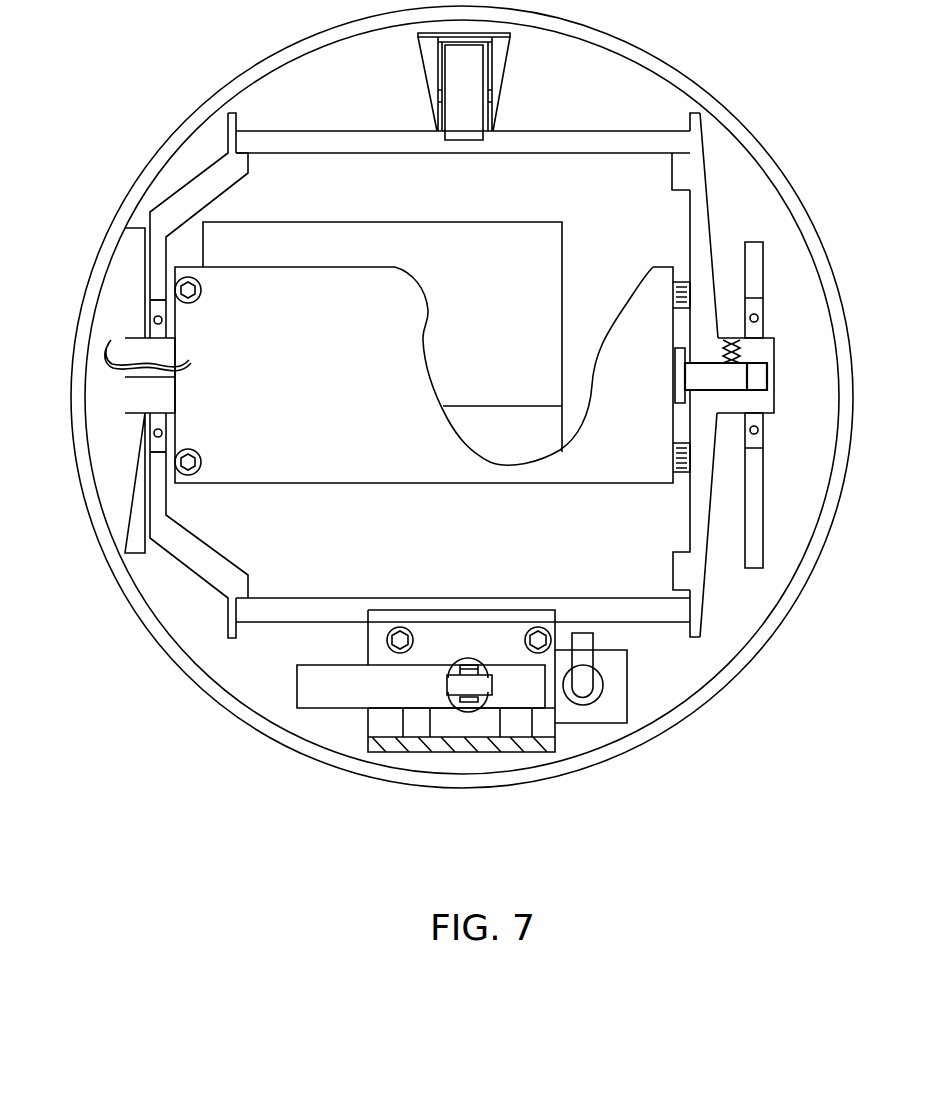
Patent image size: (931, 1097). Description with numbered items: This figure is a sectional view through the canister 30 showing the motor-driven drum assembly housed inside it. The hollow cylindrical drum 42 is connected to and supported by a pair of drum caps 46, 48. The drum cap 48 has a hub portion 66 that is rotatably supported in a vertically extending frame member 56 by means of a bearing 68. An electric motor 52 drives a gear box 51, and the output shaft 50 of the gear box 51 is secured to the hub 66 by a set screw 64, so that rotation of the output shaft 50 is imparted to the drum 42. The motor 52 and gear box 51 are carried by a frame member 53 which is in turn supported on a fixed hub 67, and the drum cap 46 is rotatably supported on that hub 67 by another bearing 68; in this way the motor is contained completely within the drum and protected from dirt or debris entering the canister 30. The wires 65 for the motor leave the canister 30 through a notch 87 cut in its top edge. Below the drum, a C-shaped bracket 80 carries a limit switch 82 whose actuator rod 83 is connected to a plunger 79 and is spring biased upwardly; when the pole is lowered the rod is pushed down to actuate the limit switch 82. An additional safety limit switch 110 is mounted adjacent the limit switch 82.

The canister 30 is at (225, 95).
The drum 42 is at (607, 143).
The drum cap 46 is at (233, 577).
The drum cap 48 is at (703, 215).
The output shaft 50 is at (733, 377).
The gear box 51 is at (600, 282).
The electric motor 52 is at (463, 236).
The frame member 53 is at (597, 470).
The frame member 56 is at (123, 485).
The set screw 64 is at (738, 350).
The wires 65 is at (113, 364).
The hub portion 66 is at (767, 347).
The fixed hub 67 is at (132, 395).
The bearing 68 is at (153, 310).
The plunger 79 is at (464, 665).
The C-shaped bracket 80 is at (467, 617).
The limit switch 82 is at (322, 690).
The actuator rod 83 is at (482, 682).
The notch 87 is at (518, 722).
The safety limit switch 110 is at (612, 672).